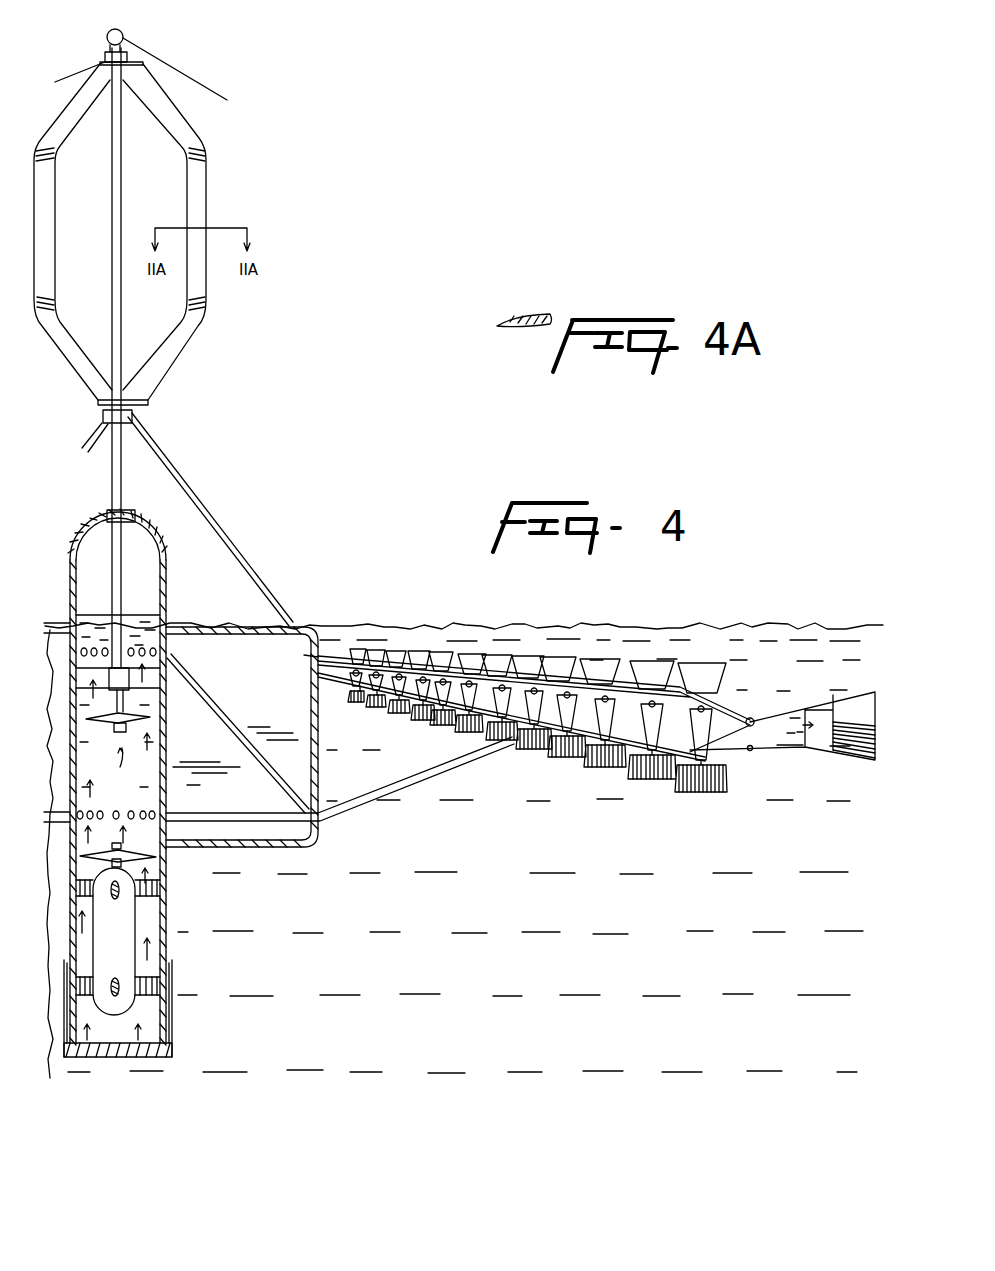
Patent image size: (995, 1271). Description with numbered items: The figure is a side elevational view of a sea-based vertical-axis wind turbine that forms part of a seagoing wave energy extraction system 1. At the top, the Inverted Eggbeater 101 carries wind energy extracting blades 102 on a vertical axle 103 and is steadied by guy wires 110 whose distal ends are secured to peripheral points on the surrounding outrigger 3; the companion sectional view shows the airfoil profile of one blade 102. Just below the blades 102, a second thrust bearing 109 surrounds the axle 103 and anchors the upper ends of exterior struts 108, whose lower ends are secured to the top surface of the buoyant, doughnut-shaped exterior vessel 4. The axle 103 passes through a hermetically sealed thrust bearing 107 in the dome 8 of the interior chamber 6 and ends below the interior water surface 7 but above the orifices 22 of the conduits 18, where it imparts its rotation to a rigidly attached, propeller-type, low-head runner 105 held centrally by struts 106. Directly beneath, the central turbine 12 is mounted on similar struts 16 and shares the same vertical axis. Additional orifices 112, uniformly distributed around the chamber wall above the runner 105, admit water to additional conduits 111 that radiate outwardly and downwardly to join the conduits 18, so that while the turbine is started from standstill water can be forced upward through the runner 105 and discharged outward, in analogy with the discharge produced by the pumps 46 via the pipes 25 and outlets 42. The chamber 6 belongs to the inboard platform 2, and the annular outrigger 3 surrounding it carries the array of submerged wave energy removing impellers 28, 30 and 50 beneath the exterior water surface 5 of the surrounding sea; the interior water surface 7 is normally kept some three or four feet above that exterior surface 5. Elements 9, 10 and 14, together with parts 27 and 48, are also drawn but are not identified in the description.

In FIG. 4, the seagoing wave energy extraction system 1 is at (264, 609).
In FIG. 4, the inboard platform 2 is at (190, 622).
In FIG. 4, the annular outrigger 3 is at (458, 643).
In FIG. 4, the exterior vessel 4 is at (245, 628).
In FIG. 4, the exterior water surface 5 is at (606, 627).
In FIG. 4, the interior chamber 6 is at (166, 748).
In FIG. 4, the interior water surface 7 is at (103, 612).
In FIG. 4, the dome 8 is at (163, 536).
In FIG. 4, the bottom chamber 9 is at (152, 1030).
In FIG. 4, the outer jacket 10 is at (167, 952).
In FIG. 4, the central turbine 12 is at (158, 856).
In FIG. 4, the buoyancy float 14 is at (127, 937).
In FIG. 4, the struts 16 is at (156, 889).
In FIG. 4, the conduits 18 is at (240, 812).
In FIG. 4, the orifices 22 is at (116, 811).
In FIG. 4, the pipes 25 is at (684, 770).
In FIG. 4, the brush neck 27 is at (428, 712).
In FIG. 4, the wave energy removing impeller 28 is at (398, 650).
In FIG. 4, the wave energy removing impeller 30 is at (390, 721).
In FIG. 4, the outlets 42 is at (473, 733).
In FIG. 4, the pumps 46 is at (378, 703).
In FIG. 4, the pivot joint 48 is at (754, 719).
In FIG. 4, the wave energy removing impeller 50 is at (832, 686).
In FIG. 4, the Inverted Eggbeater 101 is at (249, 205).
In FIG. 4, the wind energy extracting blades 102 is at (45, 203).
In FIG. 4A, the wind energy extracting blades 102 is at (541, 314).
In FIG. 4, the axle 103 is at (117, 300).
In FIG. 4, the low-head runner 105 is at (112, 728).
In FIG. 4, the struts 106 is at (160, 700).
In FIG. 4, the thrust bearing 107 is at (133, 514).
In FIG. 4, the exterior struts 108 is at (190, 486).
In FIG. 4, the second thrust bearing 109 is at (135, 415).
In FIG. 4, the guy wires 110 is at (196, 92).
In FIG. 4, the additional conduits 111 is at (222, 716).
In FIG. 4, the additional orifices 112 is at (160, 652).